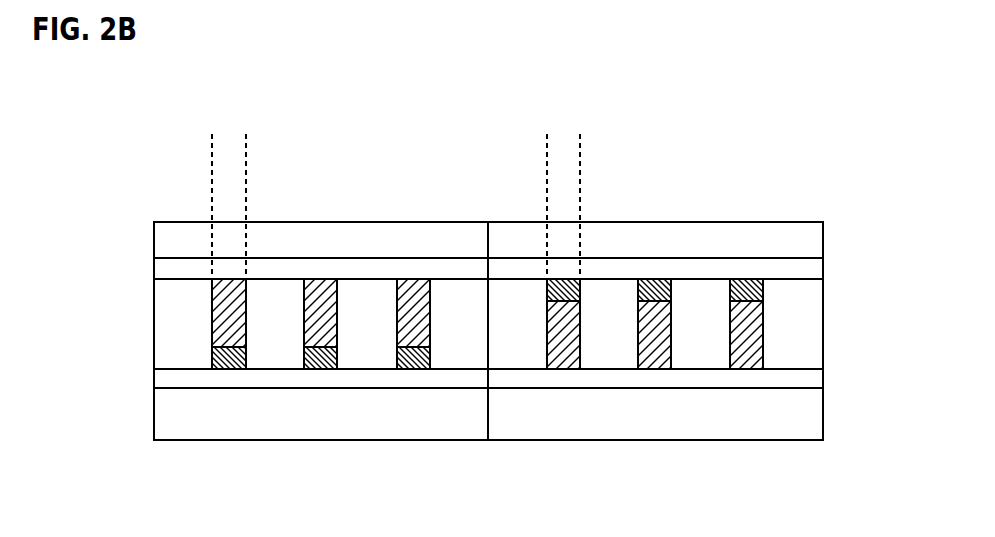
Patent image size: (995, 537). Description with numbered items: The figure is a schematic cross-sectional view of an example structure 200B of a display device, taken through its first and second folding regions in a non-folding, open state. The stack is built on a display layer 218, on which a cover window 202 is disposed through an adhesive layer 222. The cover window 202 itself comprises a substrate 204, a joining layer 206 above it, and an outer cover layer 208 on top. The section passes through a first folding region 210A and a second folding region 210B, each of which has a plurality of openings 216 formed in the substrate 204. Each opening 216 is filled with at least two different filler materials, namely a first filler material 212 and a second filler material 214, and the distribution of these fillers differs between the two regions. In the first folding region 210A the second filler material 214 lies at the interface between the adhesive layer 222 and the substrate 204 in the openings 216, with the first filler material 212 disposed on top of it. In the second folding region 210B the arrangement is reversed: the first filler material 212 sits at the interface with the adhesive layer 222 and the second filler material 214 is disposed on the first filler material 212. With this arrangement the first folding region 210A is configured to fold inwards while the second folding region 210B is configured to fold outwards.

The example structure 200B is at (831, 82).
The cover window 202 is at (76, 233).
The substrate 204 is at (170, 311).
The joining layer 206 is at (170, 267).
The outer cover layer 208 is at (170, 242).
The first folding region 210A is at (152, 190).
The second folding region 210B is at (488, 190).
The first filler material 212 is at (415, 327).
The second filler material 214 is at (412, 367).
The openings 216 is at (212, 134).
The display layer 218 is at (170, 412).
The adhesive layer 222 is at (170, 376).